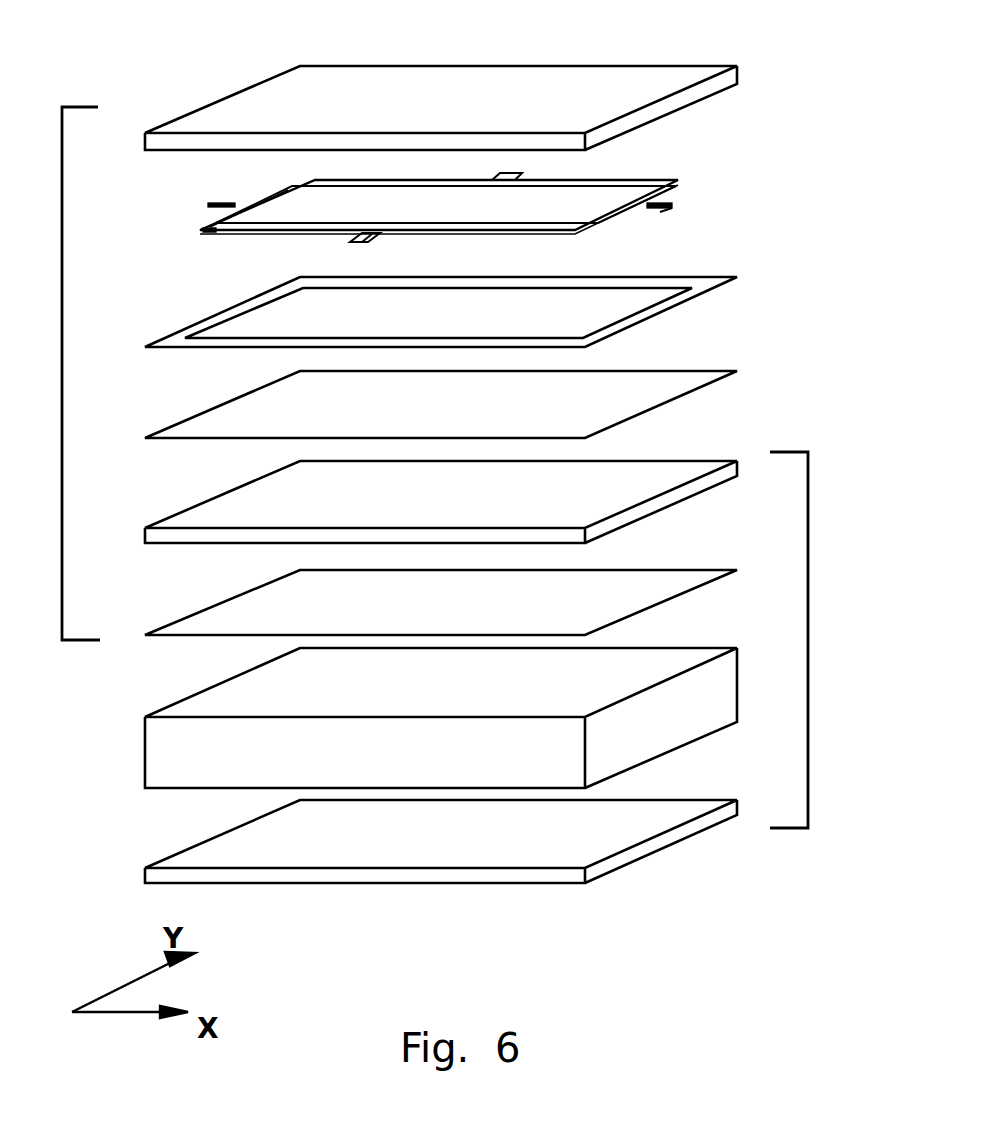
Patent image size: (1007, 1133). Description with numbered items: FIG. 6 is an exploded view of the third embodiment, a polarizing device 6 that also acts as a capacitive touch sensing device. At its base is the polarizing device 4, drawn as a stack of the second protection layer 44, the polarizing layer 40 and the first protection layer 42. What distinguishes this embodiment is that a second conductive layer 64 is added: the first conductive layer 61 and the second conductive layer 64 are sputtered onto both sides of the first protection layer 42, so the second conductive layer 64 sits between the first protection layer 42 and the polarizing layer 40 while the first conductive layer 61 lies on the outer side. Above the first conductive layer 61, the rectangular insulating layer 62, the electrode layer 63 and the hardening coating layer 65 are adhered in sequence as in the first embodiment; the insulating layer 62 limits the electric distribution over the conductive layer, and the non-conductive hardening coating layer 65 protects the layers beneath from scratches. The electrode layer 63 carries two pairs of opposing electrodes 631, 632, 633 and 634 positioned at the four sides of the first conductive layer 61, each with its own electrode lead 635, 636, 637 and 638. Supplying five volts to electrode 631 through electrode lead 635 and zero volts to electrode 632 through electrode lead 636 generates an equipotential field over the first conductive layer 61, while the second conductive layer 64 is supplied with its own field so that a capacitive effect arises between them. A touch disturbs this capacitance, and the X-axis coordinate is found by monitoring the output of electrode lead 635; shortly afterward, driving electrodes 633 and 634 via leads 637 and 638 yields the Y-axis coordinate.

The polarizing device 4 is at (808, 636).
The polarizing device 6 is at (62, 362).
The polarizing layer 40 is at (180, 748).
The first protection layer 42 is at (663, 477).
The second protection layer 44 is at (608, 835).
The first conductive layer 61 is at (680, 383).
The insulating layer 62 is at (710, 278).
The electrode layer 63 is at (650, 182).
The second conductive layer 64 is at (648, 582).
The hardening coating layer 65 is at (652, 82).
The electrode 631 is at (523, 173).
The electrode 632 is at (225, 201).
The electrode 633 is at (370, 239).
The electrode 634 is at (675, 204).
The electrode lead 635 is at (497, 172).
The electrode lead 636 is at (212, 213).
The electrode lead 637 is at (350, 238).
The electrode lead 638 is at (664, 212).